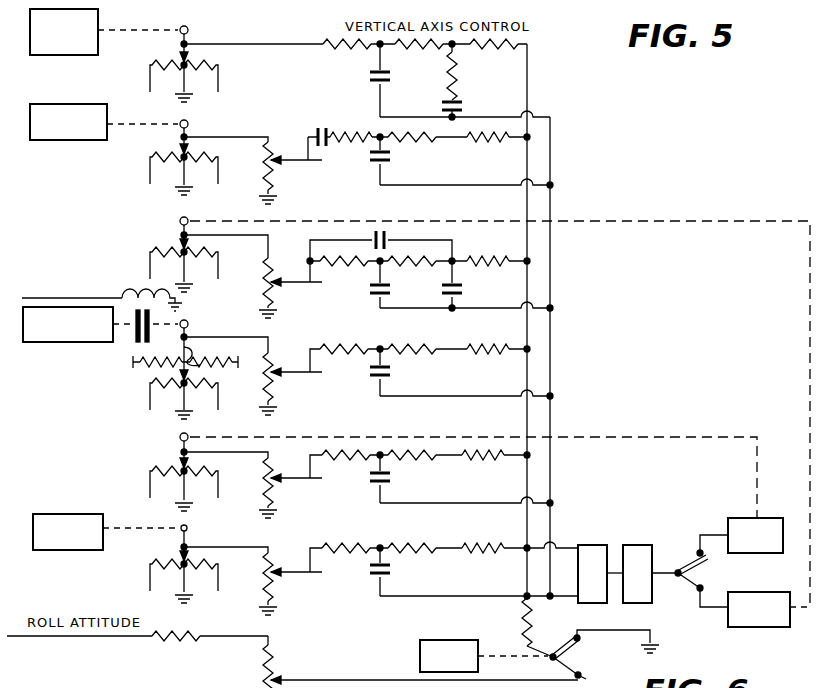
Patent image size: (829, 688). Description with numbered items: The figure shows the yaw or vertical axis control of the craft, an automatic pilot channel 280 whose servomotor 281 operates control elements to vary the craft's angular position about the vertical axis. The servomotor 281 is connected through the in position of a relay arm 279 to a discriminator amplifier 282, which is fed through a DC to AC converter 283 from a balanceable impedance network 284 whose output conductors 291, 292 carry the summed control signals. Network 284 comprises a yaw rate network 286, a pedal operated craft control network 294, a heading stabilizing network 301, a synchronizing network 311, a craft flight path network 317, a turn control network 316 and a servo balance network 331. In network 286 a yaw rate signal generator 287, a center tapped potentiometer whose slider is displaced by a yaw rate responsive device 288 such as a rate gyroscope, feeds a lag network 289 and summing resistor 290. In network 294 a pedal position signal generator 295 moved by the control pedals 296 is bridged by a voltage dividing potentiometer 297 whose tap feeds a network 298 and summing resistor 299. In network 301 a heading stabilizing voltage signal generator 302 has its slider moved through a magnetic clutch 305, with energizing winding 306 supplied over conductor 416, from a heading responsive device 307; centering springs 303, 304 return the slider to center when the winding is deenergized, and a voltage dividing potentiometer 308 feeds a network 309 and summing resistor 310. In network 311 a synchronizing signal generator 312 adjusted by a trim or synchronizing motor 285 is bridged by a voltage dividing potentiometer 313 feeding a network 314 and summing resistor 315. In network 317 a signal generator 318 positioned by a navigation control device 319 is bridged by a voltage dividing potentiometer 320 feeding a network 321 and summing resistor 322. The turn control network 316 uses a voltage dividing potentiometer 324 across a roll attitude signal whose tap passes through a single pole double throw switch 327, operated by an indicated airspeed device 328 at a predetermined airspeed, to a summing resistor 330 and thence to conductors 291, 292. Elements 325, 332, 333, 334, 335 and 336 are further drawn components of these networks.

The relay arm 279 is at (692, 560).
The automatic pilot channel 280 is at (672, 166).
The servomotor 281 is at (728, 621).
The discriminator amplifier 282 is at (638, 545).
The DC to AC converter 283 is at (590, 545).
The balanceable impedance network 284 is at (76, 221).
The trim or synchronizing motor 285 is at (738, 518).
The yaw rate network 286 is at (313, 25).
The yaw rate signal generator 287 is at (164, 57).
The yaw rate responsive device 288 is at (98, 30).
The lag network 289 is at (430, 78).
The summing resistor 290 is at (497, 50).
The conductor 291 is at (528, 90).
The conductor 292 is at (551, 157).
The pedal operated craft control network 294 is at (310, 131).
The pedal position signal generator 295 is at (170, 150).
The control pedals 296 is at (62, 140).
The voltage dividing potentiometer 297 is at (284, 170).
The network 298 is at (441, 170).
The summing resistor 299 is at (488, 142).
The heading stabilizing network 301 is at (305, 346).
The heading stabilizing voltage signal generator 302 is at (207, 349).
The centering spring 303 is at (166, 339).
The centering spring 304 is at (156, 380).
The magnetic clutch 305 is at (135, 336).
The energizing winding 306 is at (146, 289).
The heading responsive device 307 is at (42, 342).
The voltage dividing potentiometer 308 is at (284, 374).
The network 309 is at (446, 380).
The summing resistor 310 is at (493, 355).
The synchronizing network 311 is at (299, 456).
The synchronizing signal generator 312 is at (172, 462).
The voltage dividing potentiometer 313 is at (284, 488).
The network 314 is at (441, 488).
The summing resistor 315 is at (485, 462).
The turn control network 316 is at (307, 649).
The craft flight path network 317 is at (252, 536).
The signal generator 318 is at (172, 556).
The navigation control device 319 is at (68, 550).
The voltage dividing potentiometer 320 is at (284, 582).
The network 321 is at (441, 583).
The summing resistor 322 is at (488, 557).
The voltage dividing potentiometer 324 is at (293, 674).
The resistor 325 is at (237, 640).
The single pole double throw switch 327 is at (580, 650).
The indicated airspeed device 328 is at (418, 662).
The summing resistor 330 is at (526, 614).
The servo balance network 331 is at (306, 241).
The potentiometer 332 is at (172, 245).
The dashed connection line 333 is at (426, 222).
The gain potentiometer 334 is at (284, 284).
The capacitors 335 is at (431, 295).
The resistor 336 is at (498, 268).
The conductor 416 is at (54, 298).